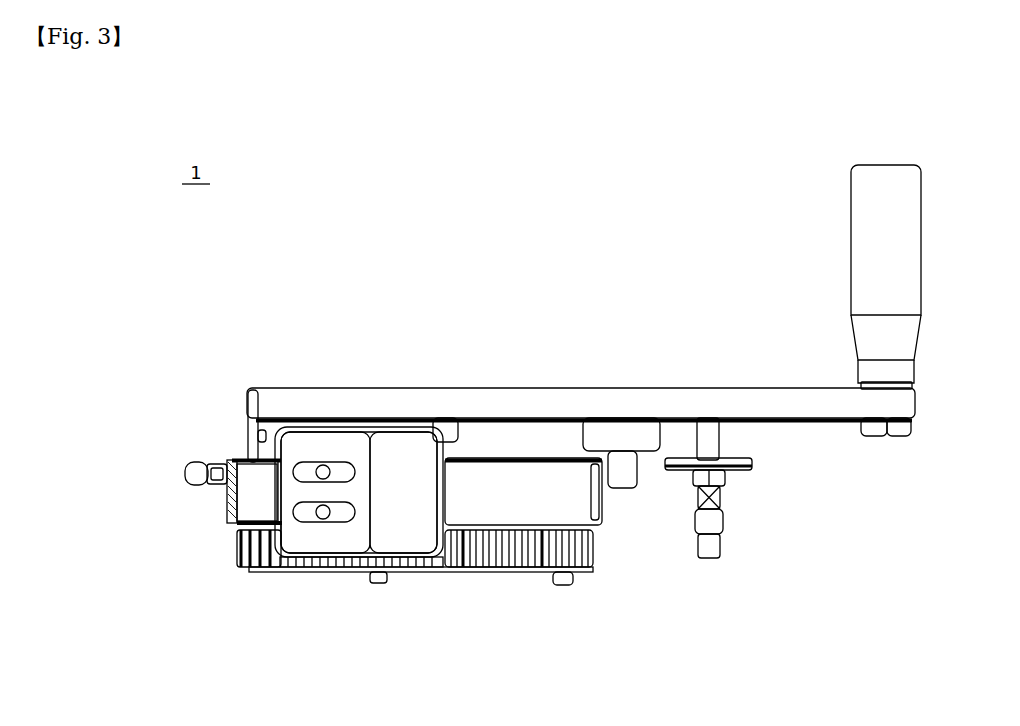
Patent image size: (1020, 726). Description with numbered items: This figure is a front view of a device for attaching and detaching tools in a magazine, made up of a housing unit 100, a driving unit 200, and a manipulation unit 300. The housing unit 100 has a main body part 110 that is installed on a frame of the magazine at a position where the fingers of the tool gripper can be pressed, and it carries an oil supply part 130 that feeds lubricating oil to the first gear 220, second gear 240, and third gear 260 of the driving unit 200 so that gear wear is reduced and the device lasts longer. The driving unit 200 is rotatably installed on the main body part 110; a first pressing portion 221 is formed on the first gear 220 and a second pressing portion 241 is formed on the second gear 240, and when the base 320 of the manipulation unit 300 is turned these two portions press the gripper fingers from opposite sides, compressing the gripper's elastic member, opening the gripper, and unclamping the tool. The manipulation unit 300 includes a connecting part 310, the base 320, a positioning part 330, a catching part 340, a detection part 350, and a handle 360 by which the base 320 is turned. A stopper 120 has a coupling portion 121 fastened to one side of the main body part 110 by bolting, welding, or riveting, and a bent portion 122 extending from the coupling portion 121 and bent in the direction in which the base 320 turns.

The housing unit 100 is at (211, 499).
The main body part 110 is at (245, 513).
The stopper 120 is at (338, 686).
The coupling portion 121 is at (297, 553).
The bent portion 122 is at (388, 538).
The oil supply part 130 is at (194, 468).
The driving unit 200 is at (236, 595).
The first gear 220 is at (596, 555).
The first pressing portion 221 is at (565, 585).
The second gear 240 is at (396, 576).
The second pressing portion 241 is at (390, 575).
The third gear 260 is at (237, 558).
The manipulation unit 300 is at (691, 372).
The connecting part 310 is at (265, 437).
The base 320 is at (368, 405).
The positioning part 330 is at (624, 432).
The catching part 340 is at (447, 437).
The detection part 350 is at (725, 487).
The handle 360 is at (870, 228).